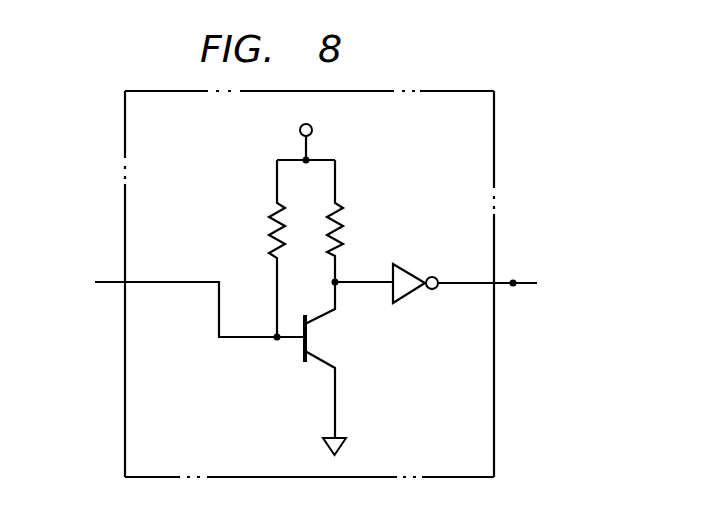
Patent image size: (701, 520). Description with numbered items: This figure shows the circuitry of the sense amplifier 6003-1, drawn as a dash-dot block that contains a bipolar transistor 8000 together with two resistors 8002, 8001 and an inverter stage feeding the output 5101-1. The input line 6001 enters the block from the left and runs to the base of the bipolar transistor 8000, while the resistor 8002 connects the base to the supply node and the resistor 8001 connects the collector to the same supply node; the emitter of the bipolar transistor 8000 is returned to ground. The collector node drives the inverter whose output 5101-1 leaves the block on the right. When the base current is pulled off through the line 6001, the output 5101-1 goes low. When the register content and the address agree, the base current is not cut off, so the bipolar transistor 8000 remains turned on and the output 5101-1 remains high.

The sense amplifier 6003-1 is at (496, 128).
The line 6001 is at (110, 284).
The base resistor 8002 is at (272, 215).
The collector load resistor 8001 is at (340, 203).
The bipolar transistor 8000 is at (305, 352).
The output 5101-1 is at (515, 281).